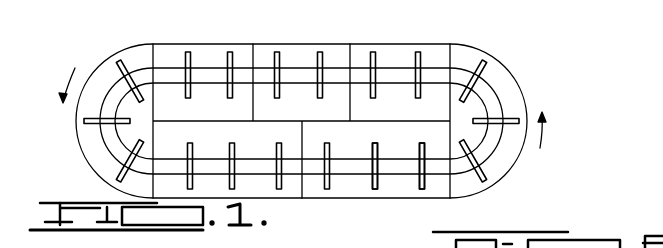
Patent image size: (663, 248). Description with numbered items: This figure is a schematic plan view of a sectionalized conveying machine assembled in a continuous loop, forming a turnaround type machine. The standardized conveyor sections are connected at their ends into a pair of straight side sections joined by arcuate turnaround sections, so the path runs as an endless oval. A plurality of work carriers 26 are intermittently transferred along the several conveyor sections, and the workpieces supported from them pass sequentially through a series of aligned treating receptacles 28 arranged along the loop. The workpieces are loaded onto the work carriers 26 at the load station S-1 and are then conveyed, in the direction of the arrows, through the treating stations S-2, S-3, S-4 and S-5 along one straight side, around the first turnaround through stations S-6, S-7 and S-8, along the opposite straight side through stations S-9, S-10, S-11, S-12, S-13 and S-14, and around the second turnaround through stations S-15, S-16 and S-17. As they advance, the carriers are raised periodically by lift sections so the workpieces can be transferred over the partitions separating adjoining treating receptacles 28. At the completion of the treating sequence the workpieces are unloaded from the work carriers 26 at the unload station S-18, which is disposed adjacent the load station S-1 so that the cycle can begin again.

The work carriers 26 is at (430, 213).
The treating receptacles 28 is at (165, 45).
The load station S-1 is at (373, 44).
The treating station S-2 is at (320, 44).
The treating station S-3 is at (277, 44).
The treating station S-4 is at (230, 44).
The treating station S-5 is at (188, 44).
The treating station S-6 is at (118, 53).
The treating station S-7 is at (84, 121).
The treating station S-8 is at (117, 181).
The treating station S-9 is at (192, 133).
The treating station S-10 is at (246, 133).
The treating station S-11 is at (296, 133).
The treating station S-12 is at (346, 133).
The treating station S-13 is at (401, 129).
The treating station S-14 is at (444, 129).
The treating station S-15 is at (486, 181).
The treating station S-16 is at (526, 113).
The treating station S-17 is at (490, 53).
The unload station S-18 is at (418, 44).